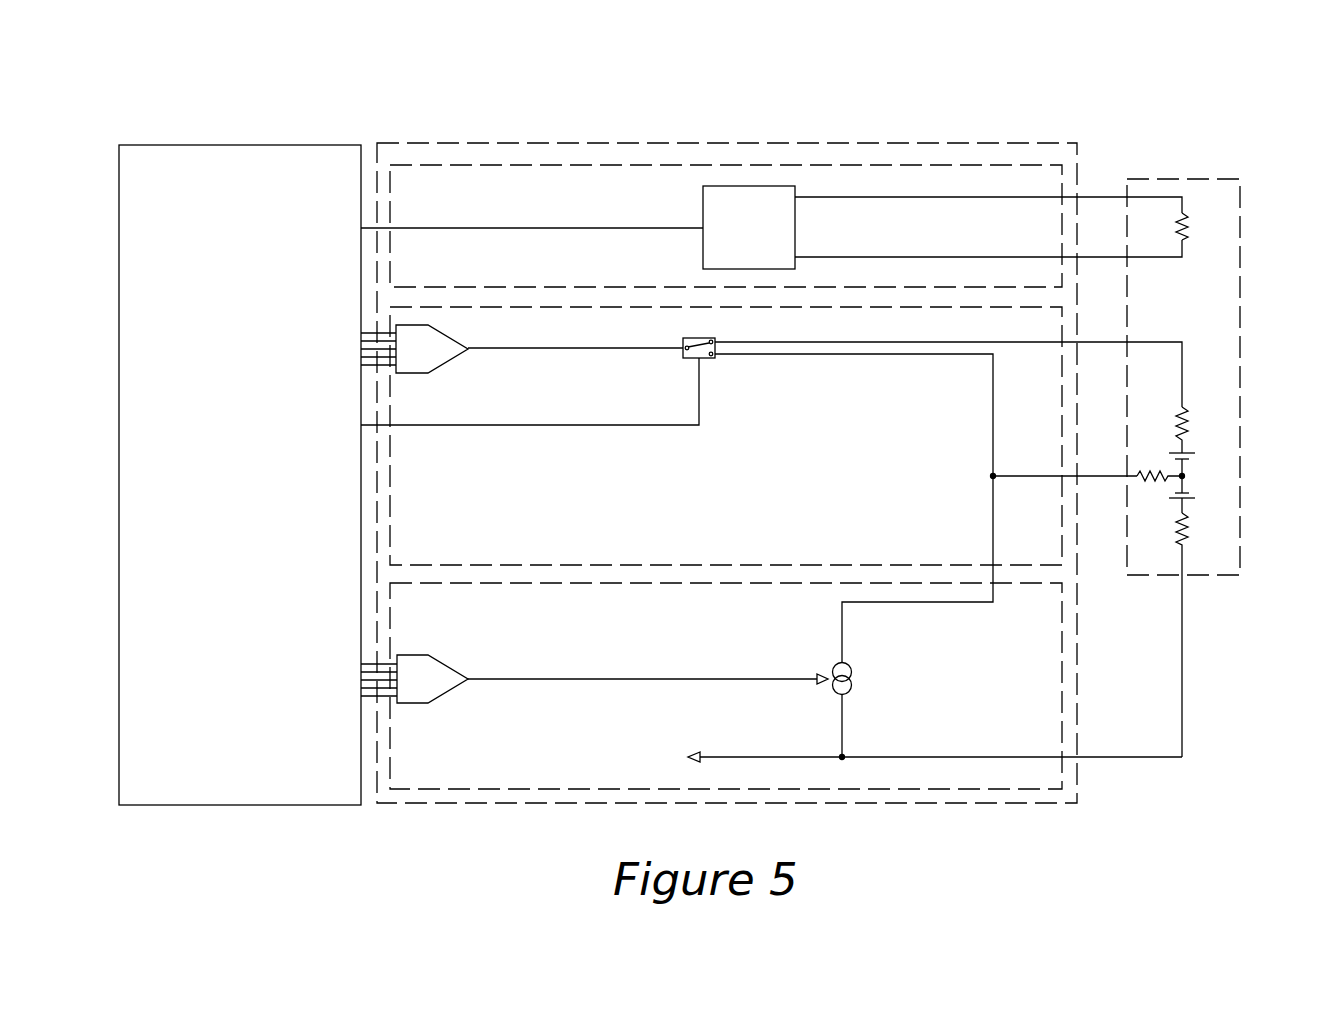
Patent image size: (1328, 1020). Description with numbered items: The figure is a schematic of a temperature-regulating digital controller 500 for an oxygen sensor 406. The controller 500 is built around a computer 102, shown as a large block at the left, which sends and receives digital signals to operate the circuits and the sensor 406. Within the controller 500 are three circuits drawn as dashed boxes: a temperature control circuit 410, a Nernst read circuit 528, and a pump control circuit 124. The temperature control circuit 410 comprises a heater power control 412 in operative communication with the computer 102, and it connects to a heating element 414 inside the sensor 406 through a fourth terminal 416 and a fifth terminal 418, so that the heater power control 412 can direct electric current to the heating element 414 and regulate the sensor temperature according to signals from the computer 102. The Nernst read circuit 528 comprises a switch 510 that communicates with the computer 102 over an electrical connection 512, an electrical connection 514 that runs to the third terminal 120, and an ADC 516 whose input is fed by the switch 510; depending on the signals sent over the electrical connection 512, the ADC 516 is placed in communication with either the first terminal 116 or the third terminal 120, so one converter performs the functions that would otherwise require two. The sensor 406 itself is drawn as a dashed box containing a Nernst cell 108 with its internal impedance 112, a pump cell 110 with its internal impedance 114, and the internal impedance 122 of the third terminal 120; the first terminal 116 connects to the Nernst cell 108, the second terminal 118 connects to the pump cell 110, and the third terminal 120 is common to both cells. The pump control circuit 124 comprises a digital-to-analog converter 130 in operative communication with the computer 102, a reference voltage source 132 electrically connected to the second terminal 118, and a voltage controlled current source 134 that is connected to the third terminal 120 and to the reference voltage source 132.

The temperature-regulating digital controller 500 is at (777, 100).
The computer 102 is at (217, 358).
The temperature control circuit 410 is at (623, 273).
The heater power control 412 is at (703, 205).
The fourth terminal 416 is at (1032, 198).
The fifth terminal 418 is at (849, 257).
The heating element 414 is at (1188, 229).
The oxygen sensor 406 is at (1182, 179).
The first terminal 116 is at (800, 342).
The switch 510 is at (684, 358).
The electrical connection 514 is at (821, 355).
The ADC 516 is at (438, 373).
The electrical connection 512 is at (576, 426).
The Nernst read circuit 528 is at (581, 546).
The third terminal 120 is at (1022, 475).
The internal impedance 122 is at (1150, 478).
The internal impedance 112 is at (1186, 418).
The Nernst cell 108 is at (1190, 452).
The pump cell 110 is at (1190, 498).
The internal impedance 114 is at (1190, 529).
The second terminal 118 is at (1182, 640).
The voltage controlled current source 134 is at (851, 670).
The digital-to-analog converter 130 is at (418, 703).
The reference voltage source 132 is at (690, 752).
The pump control circuit 124 is at (613, 775).